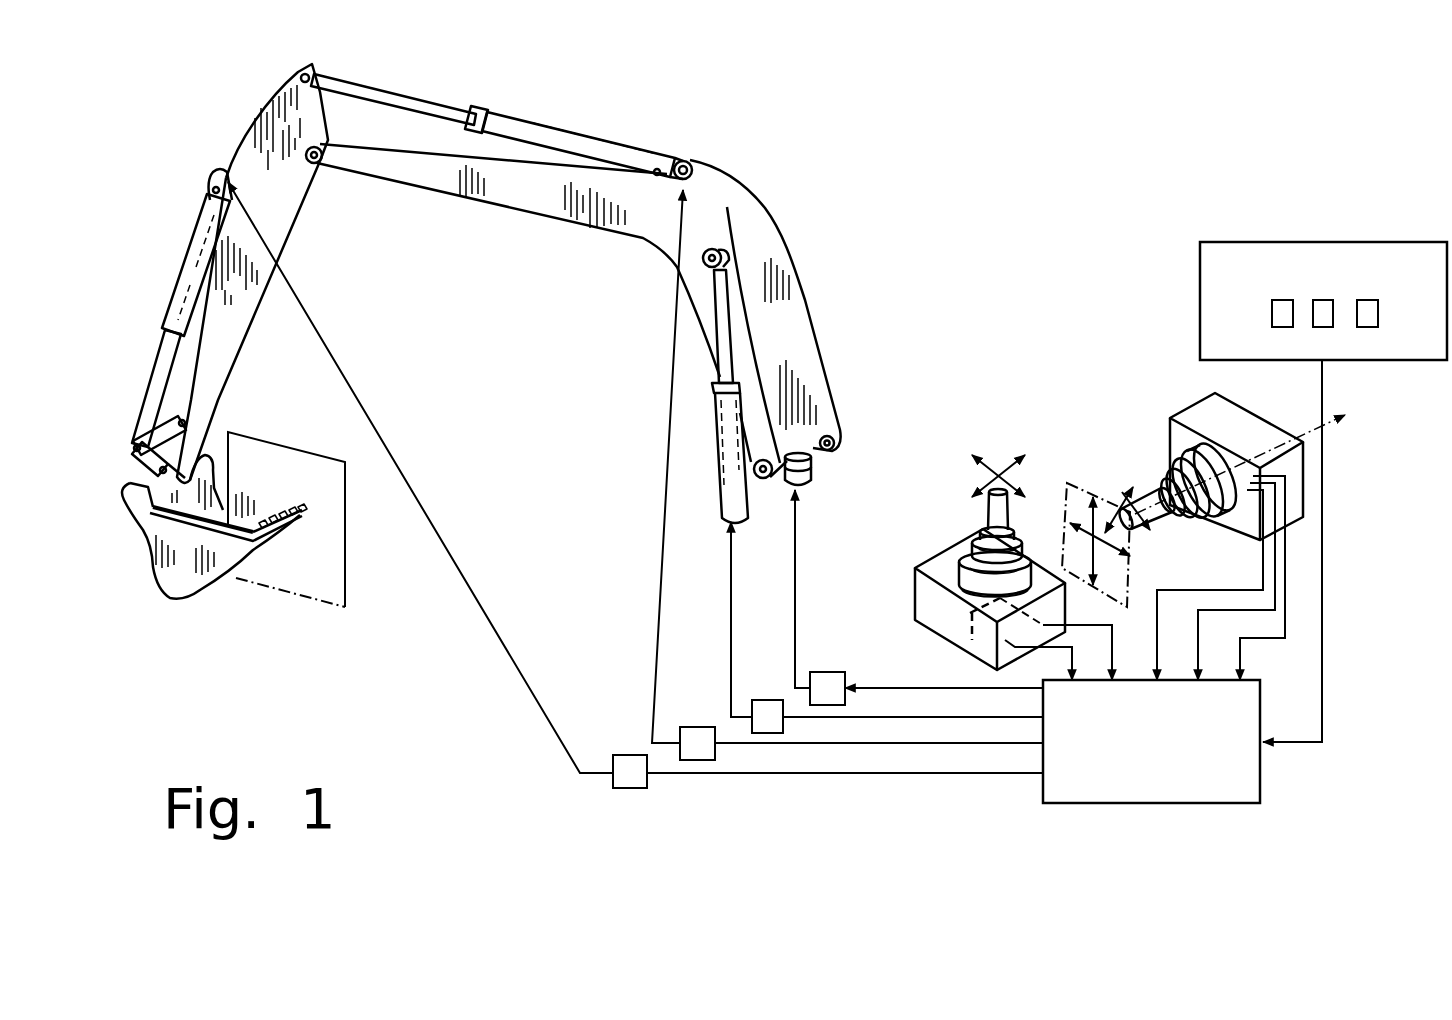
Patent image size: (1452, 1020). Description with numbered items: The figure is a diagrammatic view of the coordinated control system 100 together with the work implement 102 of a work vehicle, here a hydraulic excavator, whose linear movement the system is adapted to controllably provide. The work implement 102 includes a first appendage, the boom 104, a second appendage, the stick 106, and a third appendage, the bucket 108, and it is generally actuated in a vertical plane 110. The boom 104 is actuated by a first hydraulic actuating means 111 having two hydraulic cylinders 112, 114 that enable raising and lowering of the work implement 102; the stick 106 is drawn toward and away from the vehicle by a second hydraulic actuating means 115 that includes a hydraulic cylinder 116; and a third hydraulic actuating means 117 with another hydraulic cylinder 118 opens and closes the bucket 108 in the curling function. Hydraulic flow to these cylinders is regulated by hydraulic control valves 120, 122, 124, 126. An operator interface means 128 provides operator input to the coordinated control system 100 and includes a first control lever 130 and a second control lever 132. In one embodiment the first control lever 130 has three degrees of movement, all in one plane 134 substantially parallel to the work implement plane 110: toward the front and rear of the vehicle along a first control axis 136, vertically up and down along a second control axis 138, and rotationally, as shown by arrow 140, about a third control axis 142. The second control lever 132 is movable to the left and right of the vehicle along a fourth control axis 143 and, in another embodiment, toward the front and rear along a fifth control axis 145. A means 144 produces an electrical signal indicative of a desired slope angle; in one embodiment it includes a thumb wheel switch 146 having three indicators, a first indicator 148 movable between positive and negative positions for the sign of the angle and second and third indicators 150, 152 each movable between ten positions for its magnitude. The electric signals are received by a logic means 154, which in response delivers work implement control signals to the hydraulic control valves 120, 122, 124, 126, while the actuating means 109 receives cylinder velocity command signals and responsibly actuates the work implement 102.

The coordinated control system 100 is at (1310, 770).
The work implement 102 is at (628, 88).
The boom 104 is at (770, 215).
The stick 106 is at (240, 345).
The bucket 108 is at (175, 597).
The actuating means 109 is at (520, 493).
The vertical plane 110 is at (270, 446).
The first hydraulic actuating means 111 is at (833, 513).
The hydraulic cylinder 112 is at (722, 500).
The hydraulic cylinder 114 is at (790, 484).
The second hydraulic actuating means 115 is at (545, 228).
The hydraulic cylinder 116 is at (507, 116).
The third hydraulic actuating means 117 is at (170, 283).
The hydraulic cylinder 118 is at (200, 212).
The hydraulic control valve 120 is at (630, 790).
The hydraulic control valve 122 is at (700, 727).
The hydraulic control valve 124 is at (768, 700).
The hydraulic control valve 126 is at (828, 674).
The operator interface means 128 is at (1000, 372).
The first control lever 130 is at (1152, 485).
The second control lever 132 is at (988, 518).
The plane 134 is at (1127, 572).
The first control axis 136 is at (1080, 528).
The second control axis 138 is at (1078, 498).
The arrow 140 is at (1153, 532).
The third control axis 142 is at (1330, 418).
The fourth control axis 143 is at (1024, 455).
The means for producing an electrical signal indicative of a desired slope angle 144 is at (1205, 185).
The fifth control axis 145 is at (975, 455).
The thumb wheel switch 146 is at (1418, 362).
The first indicator 148 is at (1272, 305).
The second indicator 150 is at (1323, 300).
The third indicator 152 is at (1378, 310).
The logic means 154 is at (1118, 755).